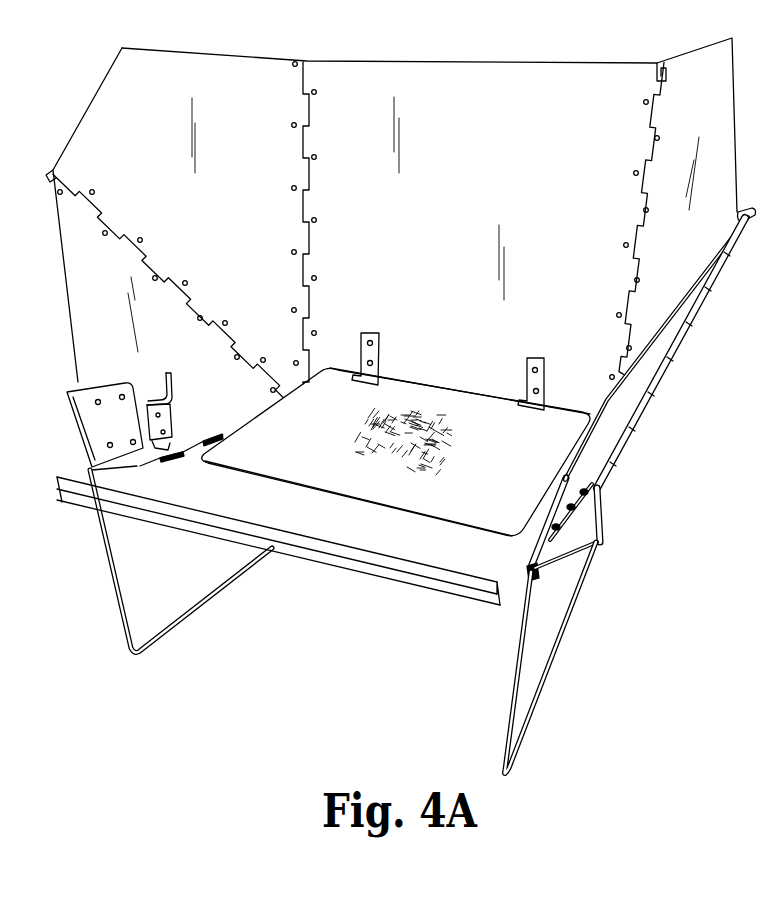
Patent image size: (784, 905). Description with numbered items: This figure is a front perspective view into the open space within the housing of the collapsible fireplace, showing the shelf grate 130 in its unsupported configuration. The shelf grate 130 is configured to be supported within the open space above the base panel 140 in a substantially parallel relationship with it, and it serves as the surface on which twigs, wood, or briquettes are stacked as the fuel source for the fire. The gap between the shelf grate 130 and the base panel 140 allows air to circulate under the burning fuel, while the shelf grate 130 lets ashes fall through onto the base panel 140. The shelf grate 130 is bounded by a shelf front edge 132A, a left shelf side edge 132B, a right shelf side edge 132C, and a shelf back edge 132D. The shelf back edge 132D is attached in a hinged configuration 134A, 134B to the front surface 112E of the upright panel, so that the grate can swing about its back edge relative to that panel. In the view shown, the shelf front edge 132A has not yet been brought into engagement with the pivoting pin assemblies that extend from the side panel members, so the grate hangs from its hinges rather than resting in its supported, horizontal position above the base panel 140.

The front surface 112E is at (517, 95).
The shelf grate 130 is at (353, 500).
The shelf front edge 132A is at (417, 515).
The left shelf side edge 132B is at (258, 455).
The right shelf side edge 132C is at (550, 538).
The shelf back edge 132D is at (459, 392).
The hinged configuration 134A is at (373, 331).
The hinged configuration 134B is at (536, 357).
The base panel 140 is at (468, 582).